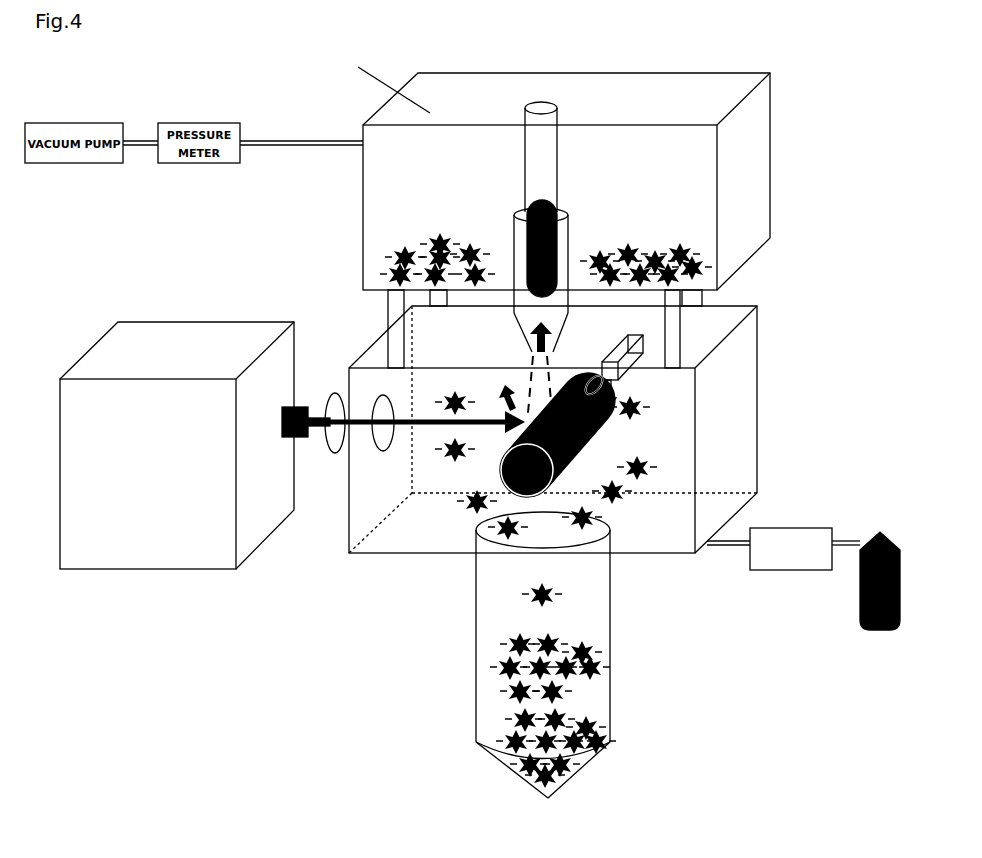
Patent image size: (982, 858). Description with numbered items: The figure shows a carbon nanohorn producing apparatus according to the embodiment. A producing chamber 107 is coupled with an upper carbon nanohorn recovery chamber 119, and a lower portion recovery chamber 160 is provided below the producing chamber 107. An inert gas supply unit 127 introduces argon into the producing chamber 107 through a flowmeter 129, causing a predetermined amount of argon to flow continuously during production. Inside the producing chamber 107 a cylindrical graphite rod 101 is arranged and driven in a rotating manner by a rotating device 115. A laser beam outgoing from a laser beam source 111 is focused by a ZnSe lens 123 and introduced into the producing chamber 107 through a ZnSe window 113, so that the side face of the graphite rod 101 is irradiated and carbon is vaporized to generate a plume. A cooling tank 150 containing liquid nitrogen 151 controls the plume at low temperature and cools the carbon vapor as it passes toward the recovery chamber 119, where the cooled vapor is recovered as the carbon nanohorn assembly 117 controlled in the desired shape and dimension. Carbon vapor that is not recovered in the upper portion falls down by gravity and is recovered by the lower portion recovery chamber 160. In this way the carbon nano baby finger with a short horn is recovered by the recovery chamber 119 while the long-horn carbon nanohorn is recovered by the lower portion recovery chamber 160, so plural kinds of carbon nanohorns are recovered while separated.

The graphite rod 101 is at (563, 462).
The producing chamber 107 is at (740, 513).
The laser beam source 111 is at (197, 368).
The ZnSe window 113 is at (387, 440).
The rotating device 115 is at (620, 372).
The carbon nanohorn assembly 117 is at (668, 257).
The carbon nanohorn recovery chamber 119 is at (363, 252).
The ZnSe lens 123 is at (335, 395).
The inert gas supply unit 127 is at (867, 627).
The flowmeter 129 is at (783, 549).
The cooling tank 150 is at (557, 108).
The liquid nitrogen 151 is at (553, 260).
The lower portion recovery chamber 160 is at (497, 570).